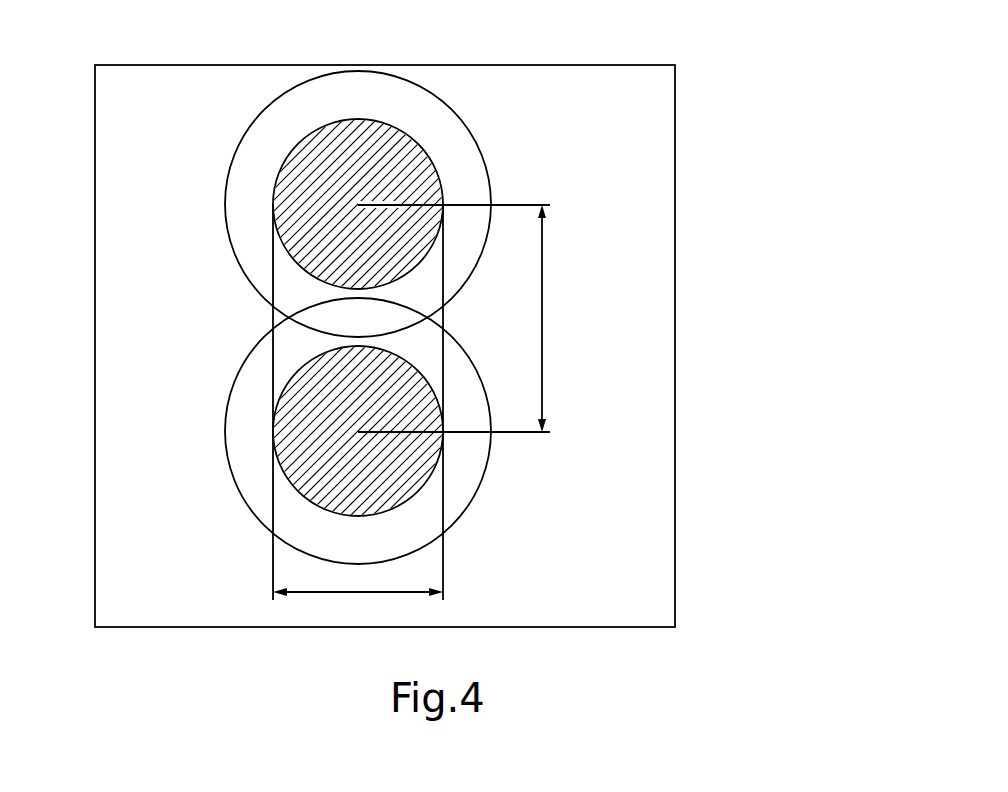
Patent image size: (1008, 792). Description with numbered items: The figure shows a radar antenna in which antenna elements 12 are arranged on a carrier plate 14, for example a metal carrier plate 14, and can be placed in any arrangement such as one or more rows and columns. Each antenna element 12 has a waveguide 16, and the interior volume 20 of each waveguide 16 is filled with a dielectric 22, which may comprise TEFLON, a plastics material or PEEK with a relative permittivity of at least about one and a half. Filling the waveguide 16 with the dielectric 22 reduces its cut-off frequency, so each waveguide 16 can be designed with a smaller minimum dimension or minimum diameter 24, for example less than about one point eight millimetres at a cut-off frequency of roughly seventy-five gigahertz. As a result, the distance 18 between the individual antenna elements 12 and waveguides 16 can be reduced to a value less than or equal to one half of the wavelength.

The antenna element 12 is at (381, 316).
The carrier plate 14 is at (655, 363).
The waveguide 16 is at (408, 103).
The distance 18 is at (543, 307).
The interior volume 20 is at (298, 166).
The dielectric 22 is at (397, 157).
The minimum diameter 24 is at (310, 592).